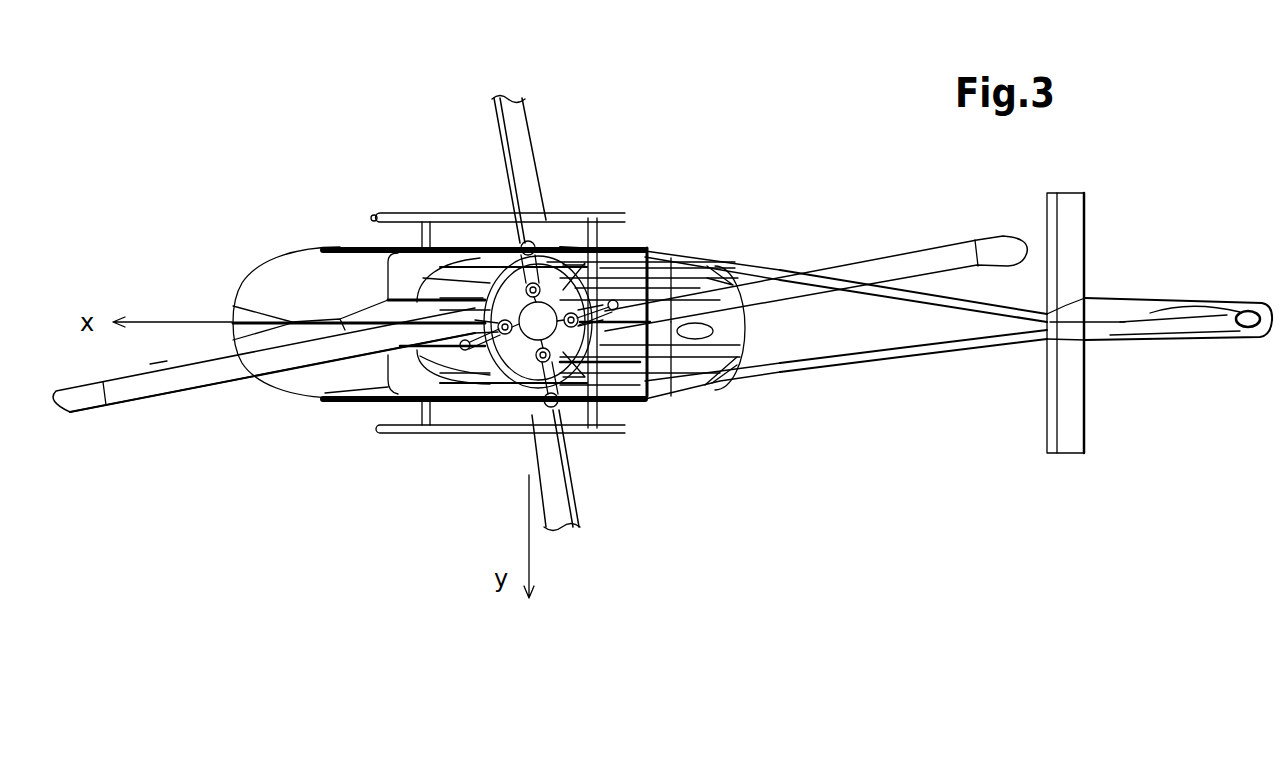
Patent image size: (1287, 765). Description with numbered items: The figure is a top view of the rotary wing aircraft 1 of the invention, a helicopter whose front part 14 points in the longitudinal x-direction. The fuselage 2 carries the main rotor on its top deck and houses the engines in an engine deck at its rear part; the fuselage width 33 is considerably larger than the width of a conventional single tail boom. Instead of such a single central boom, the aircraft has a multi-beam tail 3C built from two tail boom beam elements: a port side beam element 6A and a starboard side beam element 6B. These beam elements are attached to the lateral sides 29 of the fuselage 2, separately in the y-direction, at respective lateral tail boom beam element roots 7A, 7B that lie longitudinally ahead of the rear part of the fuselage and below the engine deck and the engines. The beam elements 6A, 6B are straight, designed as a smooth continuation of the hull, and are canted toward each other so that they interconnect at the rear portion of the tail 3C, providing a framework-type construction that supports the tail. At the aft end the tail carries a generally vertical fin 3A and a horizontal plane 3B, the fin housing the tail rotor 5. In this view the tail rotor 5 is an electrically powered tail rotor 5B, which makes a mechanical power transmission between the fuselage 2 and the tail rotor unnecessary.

The rotary wing aircraft 1 is at (286, 165).
The front part 14 is at (212, 317).
The lateral sides 29 is at (610, 235).
The fuselage width 33 is at (644, 235).
The tail boom beam element root 7A is at (674, 406).
The tail boom beam element root 7B is at (669, 239).
The fuselage 2 is at (730, 341).
The port side beam element 6A is at (811, 387).
The starboard side beam element 6B is at (755, 250).
The tail 3C is at (913, 390).
The horizontal plane 3B is at (1092, 229).
The fin 3A is at (1205, 304).
The tail rotor 5 is at (1186, 370).
The electrically powered tail rotor 5B is at (1189, 353).